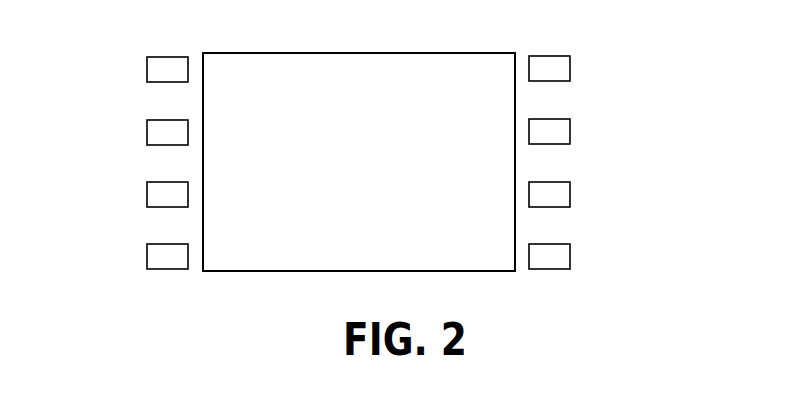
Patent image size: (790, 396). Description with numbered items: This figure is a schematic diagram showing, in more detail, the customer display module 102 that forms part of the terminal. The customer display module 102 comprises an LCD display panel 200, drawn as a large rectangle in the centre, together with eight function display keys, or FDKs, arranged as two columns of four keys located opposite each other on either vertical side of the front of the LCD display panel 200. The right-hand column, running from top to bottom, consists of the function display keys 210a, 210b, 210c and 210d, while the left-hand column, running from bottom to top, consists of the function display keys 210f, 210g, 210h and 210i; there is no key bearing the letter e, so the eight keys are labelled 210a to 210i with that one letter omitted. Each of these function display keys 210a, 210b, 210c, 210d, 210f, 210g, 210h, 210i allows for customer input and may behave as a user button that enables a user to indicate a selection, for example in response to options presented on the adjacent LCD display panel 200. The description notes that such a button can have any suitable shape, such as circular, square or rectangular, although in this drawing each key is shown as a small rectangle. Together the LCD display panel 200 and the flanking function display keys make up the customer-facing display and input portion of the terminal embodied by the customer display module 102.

The LCD display panel 200 is at (403, 52).
The function display key 210a is at (570, 68).
The function display key 210b is at (570, 131).
The function display key 210c is at (570, 193).
The function display key 210d is at (570, 258).
The function display key 210f is at (147, 257).
The function display key 210g is at (147, 193).
The function display key 210h is at (147, 133).
The function display key 210i is at (147, 67).
The customer display module 102 is at (218, 308).